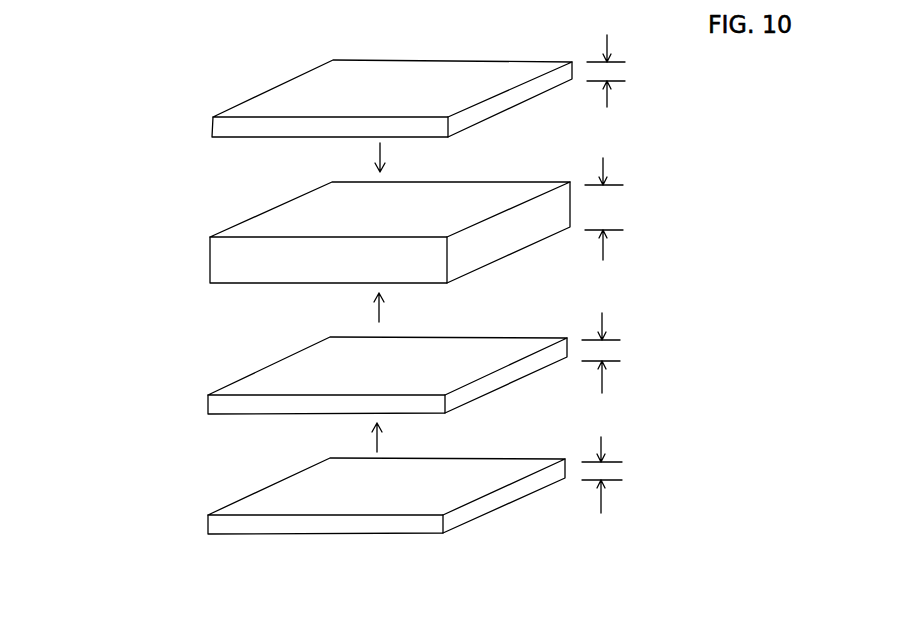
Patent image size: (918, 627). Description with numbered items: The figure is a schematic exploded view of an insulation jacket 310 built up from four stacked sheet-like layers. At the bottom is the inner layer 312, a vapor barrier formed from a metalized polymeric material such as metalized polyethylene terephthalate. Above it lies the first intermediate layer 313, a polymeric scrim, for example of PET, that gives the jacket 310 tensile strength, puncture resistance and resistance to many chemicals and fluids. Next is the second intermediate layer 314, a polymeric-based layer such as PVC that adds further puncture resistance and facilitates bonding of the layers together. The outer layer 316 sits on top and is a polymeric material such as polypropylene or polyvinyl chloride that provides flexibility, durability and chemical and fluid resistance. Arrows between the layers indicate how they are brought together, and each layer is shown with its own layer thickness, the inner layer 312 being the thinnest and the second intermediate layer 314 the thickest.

The jacket 310 is at (142, 40).
The inner layer 312 is at (230, 535).
The first intermediate layer 313 is at (223, 414).
The second intermediate layer 314 is at (222, 283).
The outer layer 316 is at (223, 137).